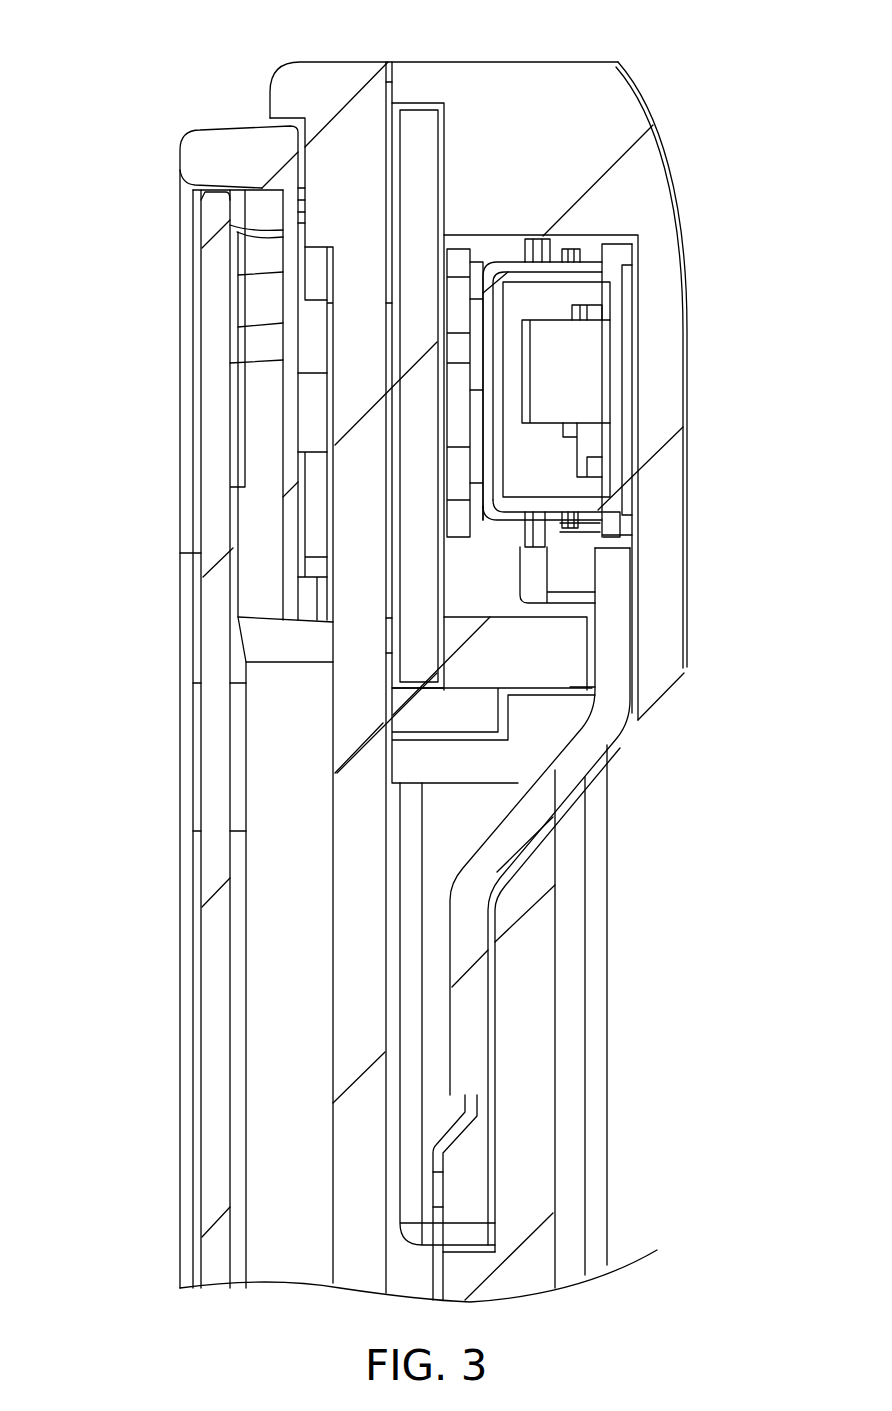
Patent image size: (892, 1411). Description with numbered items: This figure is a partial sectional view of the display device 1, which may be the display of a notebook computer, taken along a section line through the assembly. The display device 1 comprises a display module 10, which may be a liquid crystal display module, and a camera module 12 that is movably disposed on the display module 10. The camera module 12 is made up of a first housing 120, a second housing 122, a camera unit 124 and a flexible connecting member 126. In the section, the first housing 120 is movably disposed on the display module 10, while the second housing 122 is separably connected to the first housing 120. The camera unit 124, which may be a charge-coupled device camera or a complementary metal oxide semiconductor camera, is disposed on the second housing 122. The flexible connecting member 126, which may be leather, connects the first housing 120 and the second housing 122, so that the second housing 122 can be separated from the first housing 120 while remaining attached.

The display device 1 is at (181, 93).
The display module 10 is at (180, 337).
The camera module 12 is at (661, 65).
The first housing 120 is at (555, 1055).
The second housing 122 is at (683, 258).
The camera unit 124 is at (427, 152).
The flexible connecting member 126 is at (556, 778).